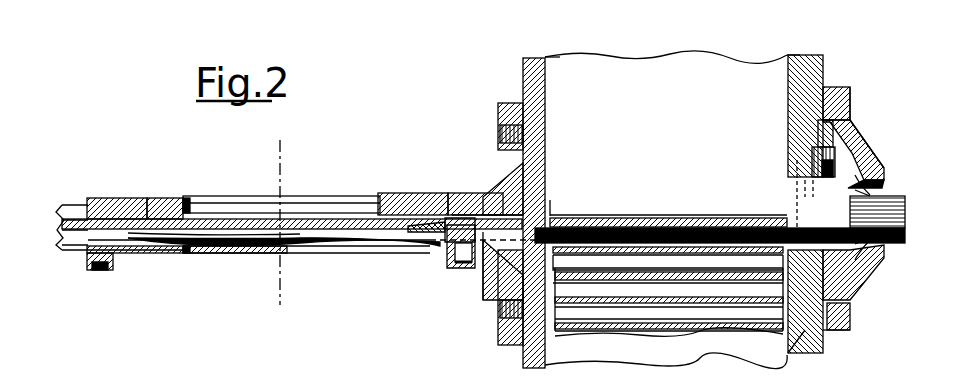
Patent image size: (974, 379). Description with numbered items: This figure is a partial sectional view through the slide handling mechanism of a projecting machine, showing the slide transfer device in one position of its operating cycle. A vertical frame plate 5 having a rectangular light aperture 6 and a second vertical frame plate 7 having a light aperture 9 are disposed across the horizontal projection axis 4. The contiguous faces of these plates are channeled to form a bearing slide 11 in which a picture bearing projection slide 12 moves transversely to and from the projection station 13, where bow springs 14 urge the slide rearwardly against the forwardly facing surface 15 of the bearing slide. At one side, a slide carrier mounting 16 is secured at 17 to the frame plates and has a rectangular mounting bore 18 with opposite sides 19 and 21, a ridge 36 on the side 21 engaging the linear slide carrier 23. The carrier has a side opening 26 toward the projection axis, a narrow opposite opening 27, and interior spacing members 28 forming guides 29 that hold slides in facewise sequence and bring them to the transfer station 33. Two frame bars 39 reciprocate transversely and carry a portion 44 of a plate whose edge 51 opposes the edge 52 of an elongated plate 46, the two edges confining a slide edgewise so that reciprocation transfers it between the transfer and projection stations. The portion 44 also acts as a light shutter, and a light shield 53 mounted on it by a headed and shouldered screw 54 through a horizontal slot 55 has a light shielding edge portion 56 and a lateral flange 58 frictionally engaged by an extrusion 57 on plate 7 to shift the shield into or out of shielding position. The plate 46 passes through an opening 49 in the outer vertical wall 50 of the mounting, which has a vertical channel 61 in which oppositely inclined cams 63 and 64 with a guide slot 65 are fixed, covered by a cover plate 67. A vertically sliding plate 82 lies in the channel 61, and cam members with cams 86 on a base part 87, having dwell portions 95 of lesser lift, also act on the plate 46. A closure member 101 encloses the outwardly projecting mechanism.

The projection axis 4 is at (278, 145).
The vertical frame plate 5 is at (115, 198).
The light aperture 6 is at (193, 196).
The second vertical frame plate 7 is at (117, 262).
The light aperture 9 is at (190, 253).
The bearing slide 11 is at (260, 245).
The picture bearing projection slide 12 is at (674, 250).
The projection station 13 is at (298, 240).
The bow springs 14 is at (220, 252).
The forwardly facing surface 15 is at (150, 198).
The slide carrier mounting 16 is at (665, 56).
The securing means 17 is at (498, 130).
The mounting bore 18 is at (615, 56).
The side of mounting bore 19 is at (545, 85).
The side of mounting bore 21 is at (796, 52).
The linear slide carrier 23 is at (660, 218).
The side opening 26 is at (505, 282).
The side opening 27 is at (800, 328).
The interior spacing members 28 is at (718, 252).
The guides 29 is at (600, 262).
The transfer station 33 is at (580, 218).
The ridge 36 is at (788, 78).
The frame bars 39 is at (68, 208).
The portion of plate 41 44 is at (330, 219).
The plate 46 is at (905, 234).
The opening 49 is at (790, 175).
The outer vertical wall 50 is at (828, 87).
The edge 51 is at (505, 190).
The edge 52 is at (760, 218).
The light shield 53 is at (462, 195).
The headed and shouldered screw 54 is at (460, 268).
The horizontal slot 55 is at (450, 242).
The light shielding edge portion 56 is at (465, 262).
The extrusion 57 is at (418, 234).
The lateral flange 58 is at (410, 195).
The vertical channel 61 is at (850, 328).
The cam 63 is at (880, 272).
The cam 64 is at (875, 165).
The guide slot 65 is at (905, 204).
The cover plate 67 is at (850, 310).
The plate 82 is at (817, 150).
The cams 86 is at (870, 195).
The base part 87 is at (852, 120).
The dwell portions 95 is at (866, 190).
The closure member 101 is at (850, 95).